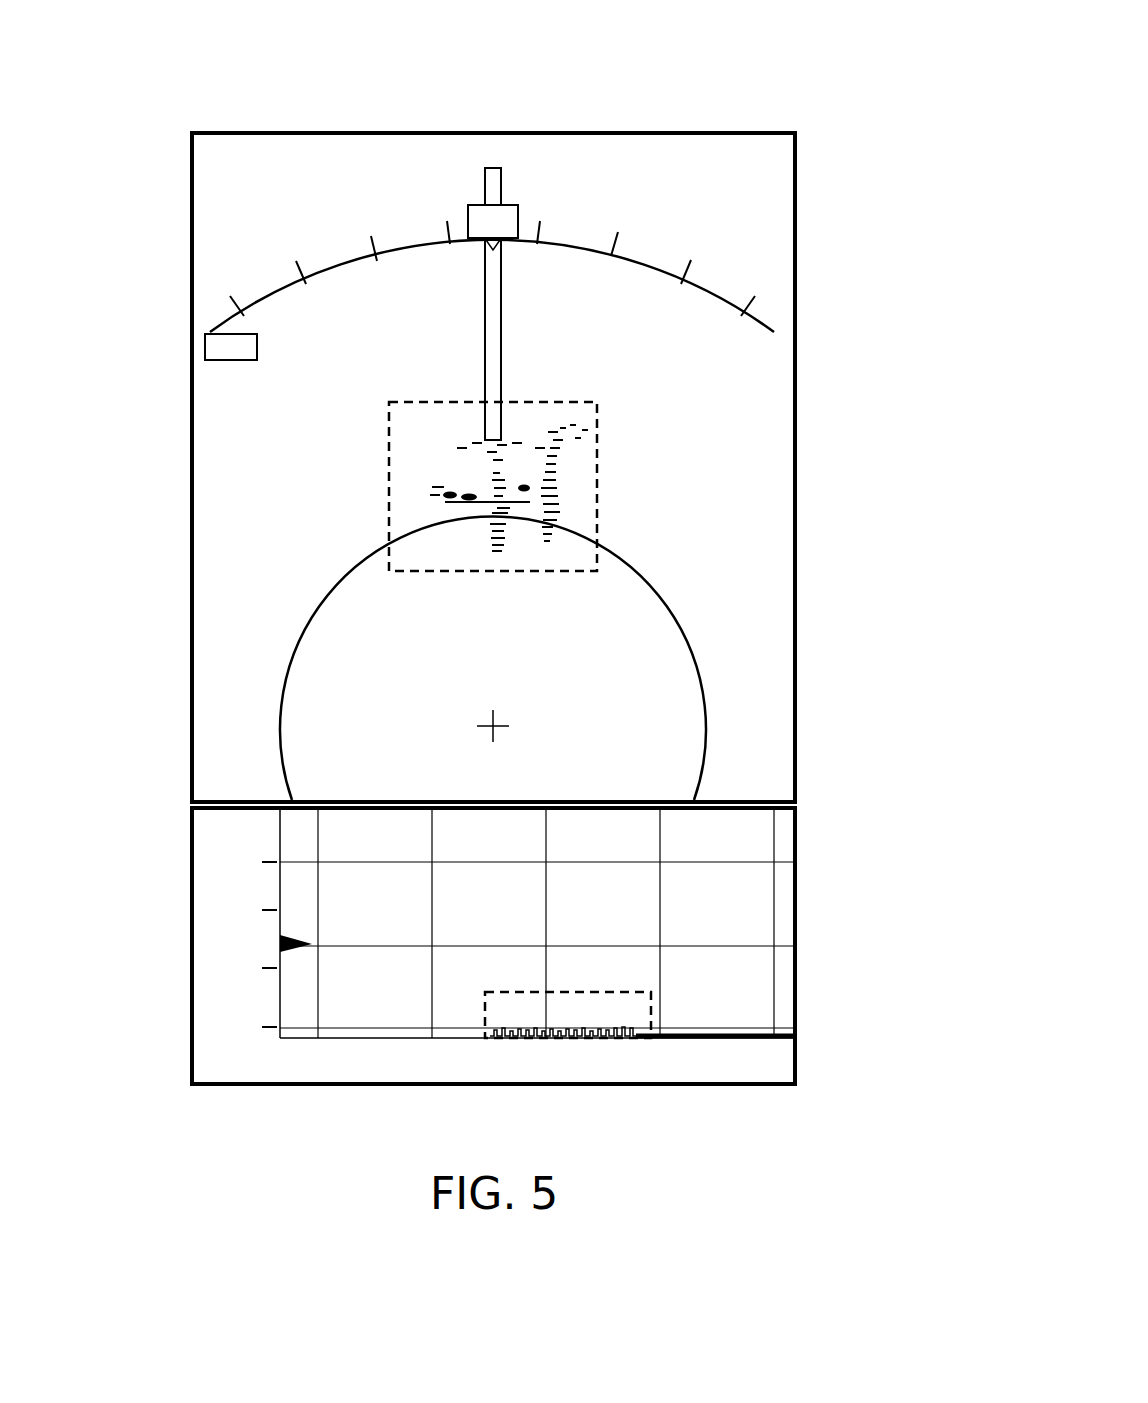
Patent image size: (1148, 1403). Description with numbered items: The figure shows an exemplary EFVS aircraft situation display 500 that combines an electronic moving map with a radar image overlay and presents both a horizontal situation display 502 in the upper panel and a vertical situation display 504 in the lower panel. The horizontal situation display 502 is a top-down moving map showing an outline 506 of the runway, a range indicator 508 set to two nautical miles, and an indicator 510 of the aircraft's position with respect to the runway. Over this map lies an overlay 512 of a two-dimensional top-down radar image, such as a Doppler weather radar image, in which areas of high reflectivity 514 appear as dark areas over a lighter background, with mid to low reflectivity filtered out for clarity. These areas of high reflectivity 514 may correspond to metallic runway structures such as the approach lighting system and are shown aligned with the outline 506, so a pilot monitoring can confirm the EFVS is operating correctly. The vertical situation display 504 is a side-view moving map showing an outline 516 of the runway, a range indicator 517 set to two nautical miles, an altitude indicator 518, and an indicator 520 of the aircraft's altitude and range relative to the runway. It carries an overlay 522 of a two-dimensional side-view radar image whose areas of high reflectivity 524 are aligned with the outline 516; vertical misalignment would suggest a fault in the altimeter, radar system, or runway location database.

The EFVS aircraft situation display 500 is at (696, 100).
The horizontal situation display 502 is at (797, 418).
The vertical situation display 504 is at (797, 890).
The outline of a runway 506 is at (491, 176).
The range indicator 508 is at (226, 322).
The indicator of the position of the aircraft 510 is at (495, 713).
The overlay of a 2-D top-down radar image 512 is at (597, 478).
The areas of high reflectivity 514 is at (432, 480).
The outline of the runway 516 is at (795, 1034).
The range indicator 517 is at (458, 1038).
The altitude indicator 518 is at (280, 896).
The indicator of the position of the aircraft 520 is at (282, 943).
The overlay of a 2-D side view radar image 522 is at (625, 992).
The areas of high reflectivity 524 is at (590, 1038).